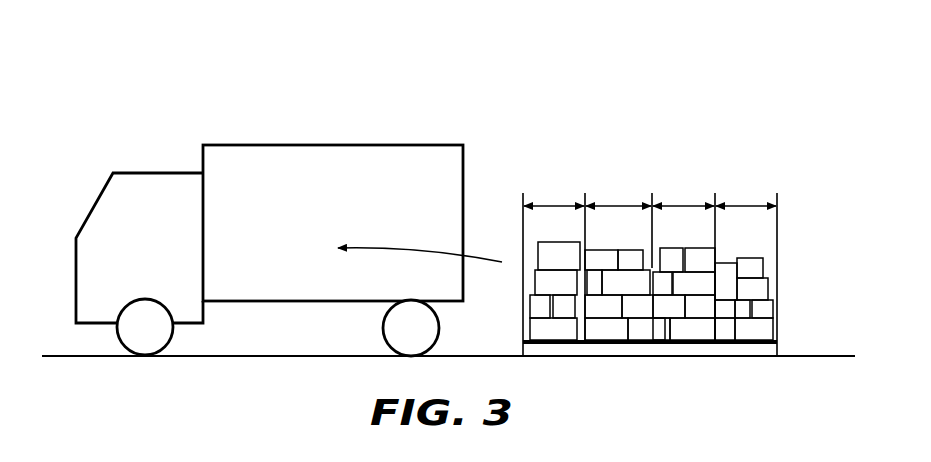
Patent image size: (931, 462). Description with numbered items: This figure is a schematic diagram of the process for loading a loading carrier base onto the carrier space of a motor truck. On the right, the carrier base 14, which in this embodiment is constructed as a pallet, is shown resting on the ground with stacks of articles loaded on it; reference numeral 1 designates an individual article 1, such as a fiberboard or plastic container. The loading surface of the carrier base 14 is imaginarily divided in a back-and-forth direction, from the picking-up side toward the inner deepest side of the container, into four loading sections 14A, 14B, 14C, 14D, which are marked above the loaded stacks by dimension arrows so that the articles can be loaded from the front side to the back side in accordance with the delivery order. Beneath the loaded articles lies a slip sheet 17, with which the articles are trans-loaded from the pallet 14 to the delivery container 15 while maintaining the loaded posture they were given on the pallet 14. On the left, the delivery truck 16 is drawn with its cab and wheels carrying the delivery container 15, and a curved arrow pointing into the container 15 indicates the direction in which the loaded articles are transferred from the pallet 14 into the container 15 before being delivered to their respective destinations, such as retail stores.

The article 1 is at (766, 259).
The carrier base 14 is at (782, 347).
The loading section 14A is at (750, 205).
The loading section 14B is at (683, 205).
The loading section 14C is at (621, 203).
The loading section 14D is at (557, 203).
The delivery container 15 is at (334, 142).
The delivery truck 16 is at (140, 170).
The slip sheet 17 is at (786, 338).